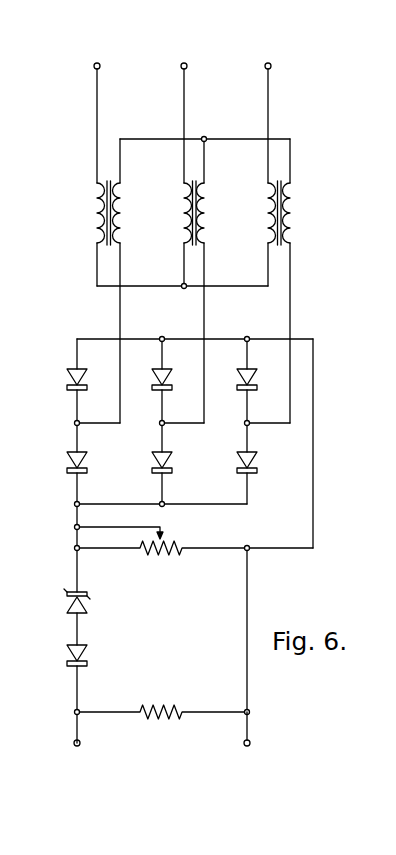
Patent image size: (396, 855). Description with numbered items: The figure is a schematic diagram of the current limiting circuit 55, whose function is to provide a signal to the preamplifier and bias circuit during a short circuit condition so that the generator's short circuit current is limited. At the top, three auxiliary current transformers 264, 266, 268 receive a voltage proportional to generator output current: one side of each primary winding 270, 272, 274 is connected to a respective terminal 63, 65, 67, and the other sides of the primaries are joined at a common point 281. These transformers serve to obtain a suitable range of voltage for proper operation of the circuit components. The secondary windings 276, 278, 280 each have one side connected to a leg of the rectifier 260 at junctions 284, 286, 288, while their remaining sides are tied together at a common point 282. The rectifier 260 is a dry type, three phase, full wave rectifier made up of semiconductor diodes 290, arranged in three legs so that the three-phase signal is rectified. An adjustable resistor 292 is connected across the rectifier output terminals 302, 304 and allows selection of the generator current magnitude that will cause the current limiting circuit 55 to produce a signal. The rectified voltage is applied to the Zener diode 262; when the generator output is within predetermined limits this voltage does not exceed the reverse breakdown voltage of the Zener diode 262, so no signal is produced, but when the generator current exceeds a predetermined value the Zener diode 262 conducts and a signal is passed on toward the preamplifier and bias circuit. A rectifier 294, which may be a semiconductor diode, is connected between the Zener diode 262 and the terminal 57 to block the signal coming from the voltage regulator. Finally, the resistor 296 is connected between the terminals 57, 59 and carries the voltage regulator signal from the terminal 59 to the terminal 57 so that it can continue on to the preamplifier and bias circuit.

The current limiting circuit 55 is at (363, 324).
The terminal 57 is at (81, 745).
The terminal 59 is at (243, 745).
The terminal 63 is at (95, 66).
The terminal 65 is at (183, 66).
The terminal 67 is at (263, 66).
The dry type rectifier 260 is at (136, 449).
The Zener diode 262 is at (88, 609).
The current transformer 264 is at (83, 227).
The current transformer 266 is at (173, 227).
The current transformer 268 is at (334, 217).
The primary winding 270 is at (97, 194).
The primary winding 272 is at (183, 201).
The primary winding 274 is at (268, 205).
The secondary winding 276 is at (120, 194).
The secondary winding 278 is at (204, 194).
The secondary winding 280 is at (290, 194).
The common point 281 is at (195, 304).
The common point 282 is at (205, 136).
The junction 284 is at (74, 421).
The junction 286 is at (164, 422).
The junction 288 is at (250, 422).
The semiconductor diodes 290 is at (73, 369).
The adjustable resistor 292 is at (160, 533).
The rectifier 294 is at (88, 650).
The resistor 296 is at (182, 690).
The output terminal 302 is at (74, 548).
The output terminal 304 is at (263, 531).